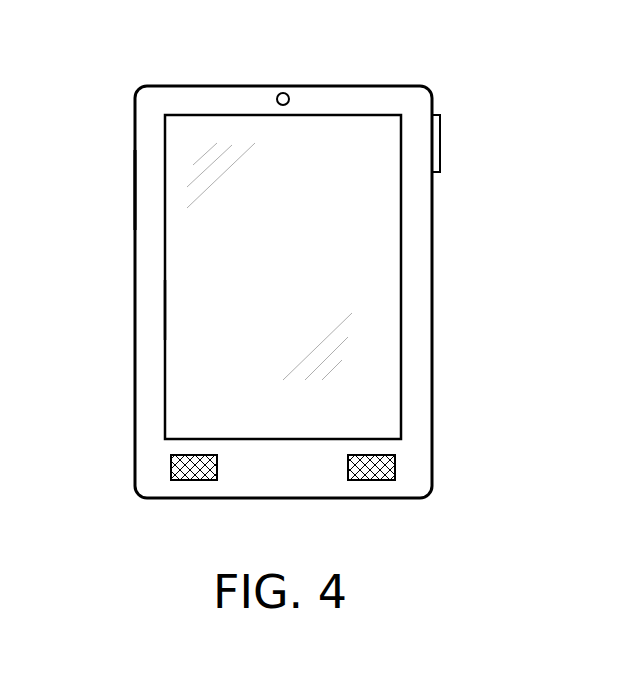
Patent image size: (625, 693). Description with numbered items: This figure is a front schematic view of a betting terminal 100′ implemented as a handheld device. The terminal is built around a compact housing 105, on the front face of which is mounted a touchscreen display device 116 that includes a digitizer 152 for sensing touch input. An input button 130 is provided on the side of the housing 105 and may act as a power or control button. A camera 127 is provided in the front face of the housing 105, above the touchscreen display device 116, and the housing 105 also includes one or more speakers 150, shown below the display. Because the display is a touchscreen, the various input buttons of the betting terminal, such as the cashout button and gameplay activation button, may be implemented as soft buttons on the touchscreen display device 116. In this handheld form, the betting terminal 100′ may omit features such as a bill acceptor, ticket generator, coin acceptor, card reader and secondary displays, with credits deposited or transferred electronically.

The betting terminal 100′ is at (432, 232).
The housing 105 is at (135, 188).
The touchscreen display device 116 is at (394, 322).
The digitizer 152 is at (180, 311).
The camera 127 is at (283, 92).
The input button 130 is at (440, 144).
The speakers 150 is at (395, 462).